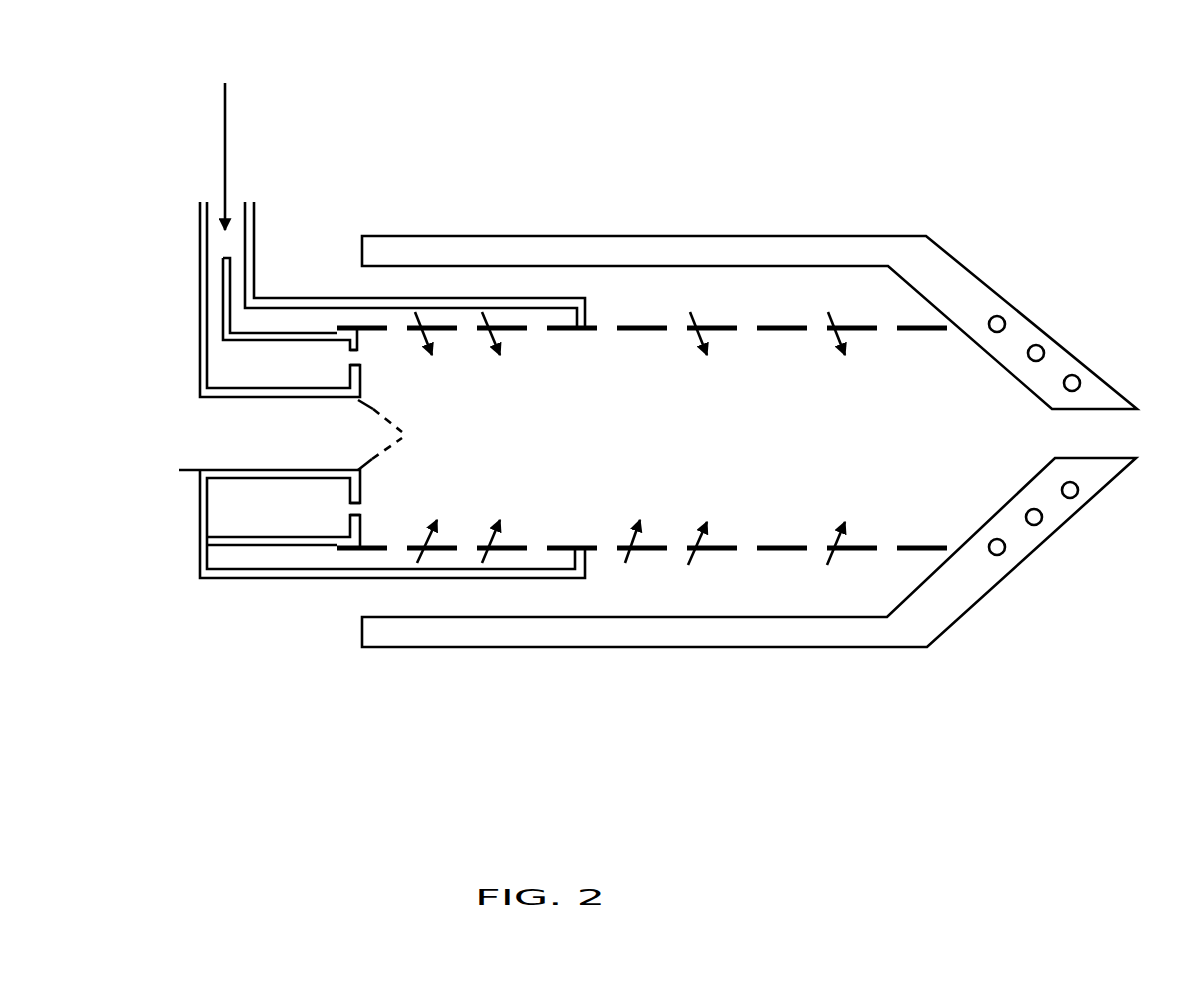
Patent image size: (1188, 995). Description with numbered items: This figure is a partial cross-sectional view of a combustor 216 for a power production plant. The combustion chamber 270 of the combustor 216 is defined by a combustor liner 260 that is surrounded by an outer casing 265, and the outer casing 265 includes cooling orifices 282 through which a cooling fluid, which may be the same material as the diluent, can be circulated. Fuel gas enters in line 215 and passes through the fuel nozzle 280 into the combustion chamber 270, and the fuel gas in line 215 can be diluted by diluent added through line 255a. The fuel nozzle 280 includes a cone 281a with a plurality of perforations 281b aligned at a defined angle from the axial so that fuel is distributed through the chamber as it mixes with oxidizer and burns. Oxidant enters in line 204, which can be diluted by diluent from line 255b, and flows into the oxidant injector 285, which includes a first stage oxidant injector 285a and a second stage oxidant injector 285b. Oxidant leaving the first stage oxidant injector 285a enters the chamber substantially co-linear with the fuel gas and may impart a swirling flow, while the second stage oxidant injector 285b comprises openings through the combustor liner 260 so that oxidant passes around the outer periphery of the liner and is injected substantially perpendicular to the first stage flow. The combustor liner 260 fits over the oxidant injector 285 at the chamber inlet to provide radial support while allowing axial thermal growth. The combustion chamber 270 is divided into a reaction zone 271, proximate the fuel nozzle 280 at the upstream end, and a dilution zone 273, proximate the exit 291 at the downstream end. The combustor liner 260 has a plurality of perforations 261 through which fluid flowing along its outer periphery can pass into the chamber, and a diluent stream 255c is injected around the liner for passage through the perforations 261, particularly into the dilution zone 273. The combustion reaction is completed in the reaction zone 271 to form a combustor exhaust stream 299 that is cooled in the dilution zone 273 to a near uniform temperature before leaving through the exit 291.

The combustor 216 is at (938, 65).
The line 204 is at (385, 204).
The line 255a is at (161, 440).
The line 255b is at (222, 127).
The diluent stream 255c is at (425, 287).
The oxidant injector 285 is at (198, 258).
The first stage oxidant injector 285a is at (337, 362).
The second stage oxidant injector 285b is at (353, 316).
The outer casing 265 is at (782, 237).
The perforations 261 is at (840, 558).
The combustor liner 260 is at (727, 550).
The combustion chamber 270 is at (632, 520).
The reaction zone 271 is at (477, 453).
The dilution zone 273 is at (790, 465).
The fuel nozzle 280 is at (183, 472).
The cone 281a is at (362, 443).
The perforations 281b is at (400, 436).
The cooling orifices 282 is at (1033, 527).
The exit 291 is at (1041, 448).
The line 215 is at (232, 439).
The combustor exhaust stream 299 is at (645, 435).